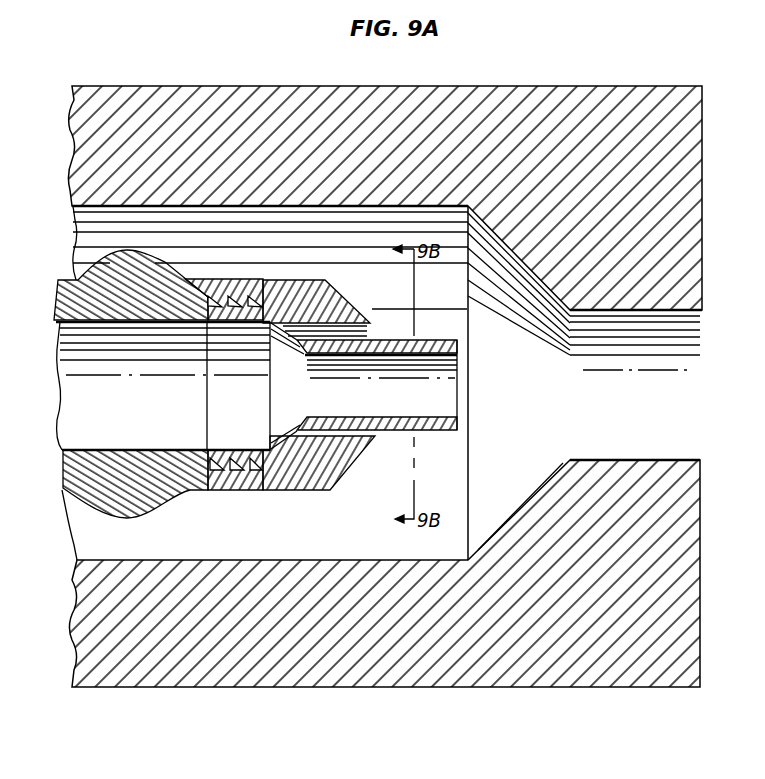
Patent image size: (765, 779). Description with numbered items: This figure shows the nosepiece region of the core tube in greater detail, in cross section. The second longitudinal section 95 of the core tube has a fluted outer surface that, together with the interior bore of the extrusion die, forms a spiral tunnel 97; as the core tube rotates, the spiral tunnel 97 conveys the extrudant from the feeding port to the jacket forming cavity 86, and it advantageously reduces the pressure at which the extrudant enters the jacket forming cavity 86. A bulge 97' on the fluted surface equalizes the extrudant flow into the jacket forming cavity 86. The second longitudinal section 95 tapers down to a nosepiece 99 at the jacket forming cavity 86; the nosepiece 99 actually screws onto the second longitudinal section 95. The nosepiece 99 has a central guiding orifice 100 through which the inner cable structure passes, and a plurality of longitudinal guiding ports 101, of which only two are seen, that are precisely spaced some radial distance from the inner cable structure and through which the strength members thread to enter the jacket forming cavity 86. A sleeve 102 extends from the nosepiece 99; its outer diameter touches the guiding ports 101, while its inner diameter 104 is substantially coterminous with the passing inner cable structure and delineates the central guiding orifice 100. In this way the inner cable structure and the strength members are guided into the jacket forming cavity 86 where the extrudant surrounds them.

The jacket forming cavity 86 is at (460, 478).
The second longitudinal section 95 is at (66, 278).
The spiral tunnel 97 is at (180, 441).
The bulge 97' is at (180, 441).
The nosepiece 99 is at (346, 310).
The central guiding orifice 100 is at (442, 400).
The longitudinal guiding ports 101 is at (370, 337).
The sleeve 102 is at (422, 342).
The inner diameter 104 is at (440, 360).